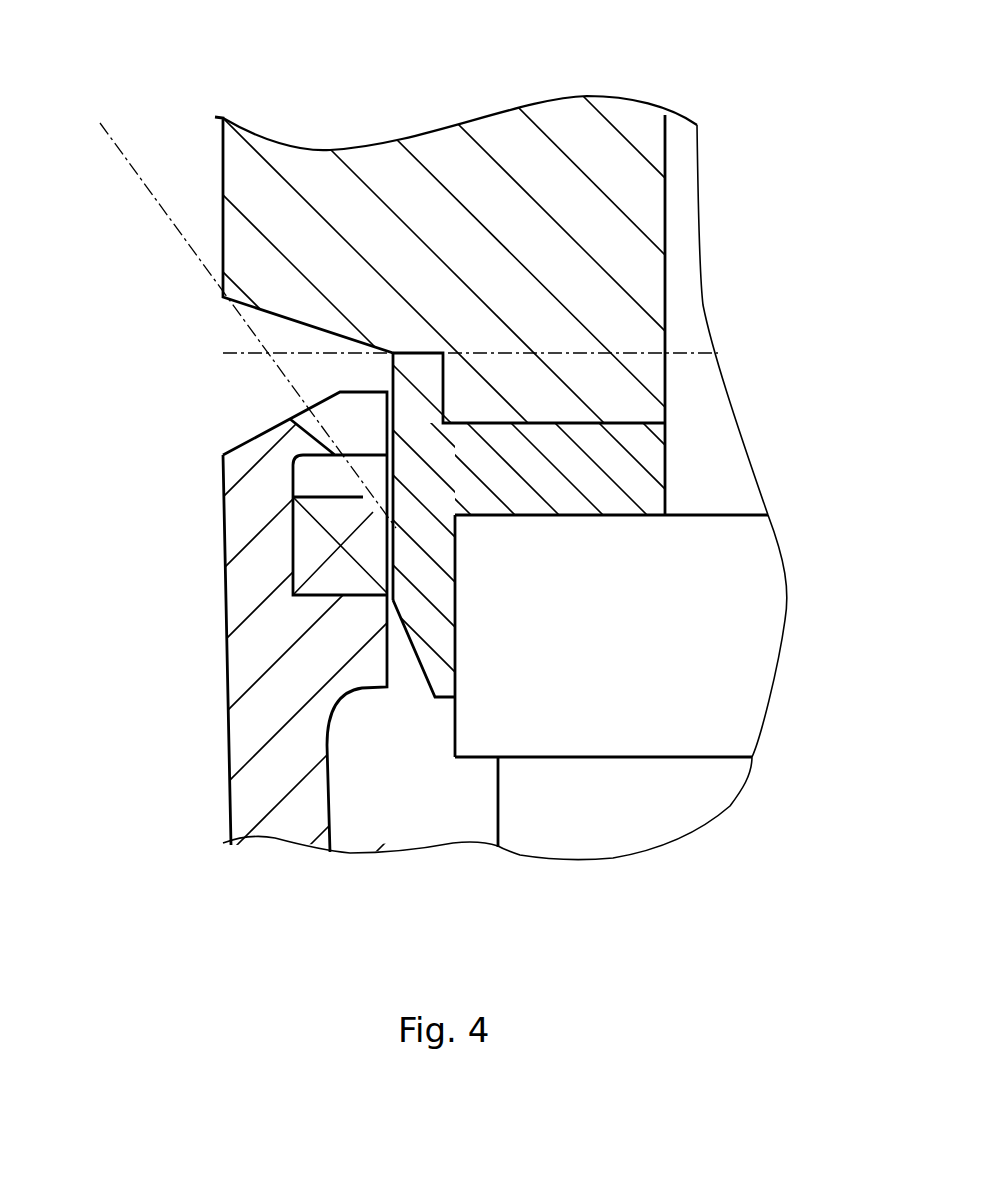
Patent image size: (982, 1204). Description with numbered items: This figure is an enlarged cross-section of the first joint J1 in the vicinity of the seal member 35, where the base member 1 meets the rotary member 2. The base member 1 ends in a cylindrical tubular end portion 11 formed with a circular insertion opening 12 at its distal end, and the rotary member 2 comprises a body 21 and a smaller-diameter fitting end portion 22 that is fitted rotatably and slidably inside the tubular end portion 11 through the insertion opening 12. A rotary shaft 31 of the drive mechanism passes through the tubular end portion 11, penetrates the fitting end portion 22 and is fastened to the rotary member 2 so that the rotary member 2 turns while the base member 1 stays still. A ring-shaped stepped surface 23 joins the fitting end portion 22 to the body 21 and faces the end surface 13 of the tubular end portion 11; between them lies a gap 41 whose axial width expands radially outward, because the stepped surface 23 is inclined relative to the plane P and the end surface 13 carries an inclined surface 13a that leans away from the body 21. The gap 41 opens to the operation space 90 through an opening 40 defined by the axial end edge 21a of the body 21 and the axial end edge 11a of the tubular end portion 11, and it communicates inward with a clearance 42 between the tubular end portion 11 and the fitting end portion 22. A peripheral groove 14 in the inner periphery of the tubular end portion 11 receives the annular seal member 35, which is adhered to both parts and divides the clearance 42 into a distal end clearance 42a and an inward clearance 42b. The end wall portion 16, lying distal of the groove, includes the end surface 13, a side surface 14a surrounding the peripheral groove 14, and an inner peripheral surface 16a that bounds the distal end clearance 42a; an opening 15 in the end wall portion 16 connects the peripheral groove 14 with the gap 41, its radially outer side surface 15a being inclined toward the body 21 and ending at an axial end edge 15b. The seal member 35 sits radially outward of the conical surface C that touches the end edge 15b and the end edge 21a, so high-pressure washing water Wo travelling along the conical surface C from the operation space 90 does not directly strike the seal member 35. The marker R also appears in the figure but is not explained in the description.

The base member 1 is at (328, 848).
The rotary member 2 is at (634, 100).
The tubular end portion 11 is at (284, 822).
The axial end edge 11a is at (222, 455).
The insertion opening 12 is at (397, 420).
The end surface 13 is at (362, 392).
The inclined surface 13a is at (248, 441).
The peripheral groove 14 is at (402, 478).
The side surface 14a is at (305, 450).
The opening 15 is at (405, 422).
The side surface 15a is at (300, 416).
The axial end edge 15b is at (320, 447).
The end wall portion 16 is at (312, 443).
The inner peripheral surface 16a is at (397, 422).
The body 21 is at (623, 243).
The axial end edge 21a is at (223, 295).
The fitting end portion 22 is at (640, 455).
The stepped surface 23 is at (260, 310).
The rotary shaft 31 is at (650, 824).
The seal member 35 is at (325, 580).
The opening 40 is at (217, 375).
The gap 41 is at (300, 328).
The clearance 42 is at (401, 690).
The distal end clearance 42a is at (395, 428).
The inward clearance 42b is at (402, 663).
The operation space 90 is at (100, 683).
The conical surface C is at (125, 155).
The first joint J1 is at (771, 418).
The plane P is at (683, 350).
The rotation direction R is at (221, 835).
The high-pressure washing water Wo is at (95, 109).